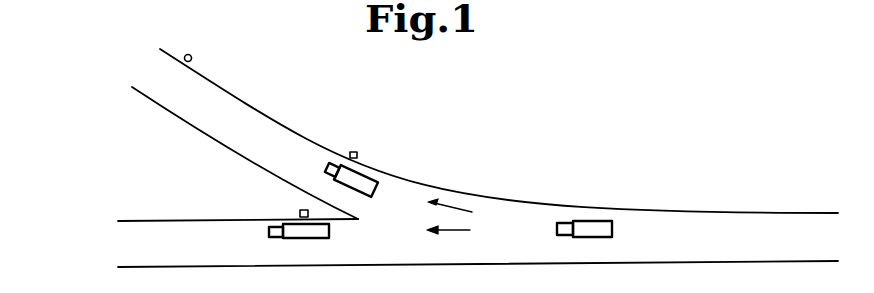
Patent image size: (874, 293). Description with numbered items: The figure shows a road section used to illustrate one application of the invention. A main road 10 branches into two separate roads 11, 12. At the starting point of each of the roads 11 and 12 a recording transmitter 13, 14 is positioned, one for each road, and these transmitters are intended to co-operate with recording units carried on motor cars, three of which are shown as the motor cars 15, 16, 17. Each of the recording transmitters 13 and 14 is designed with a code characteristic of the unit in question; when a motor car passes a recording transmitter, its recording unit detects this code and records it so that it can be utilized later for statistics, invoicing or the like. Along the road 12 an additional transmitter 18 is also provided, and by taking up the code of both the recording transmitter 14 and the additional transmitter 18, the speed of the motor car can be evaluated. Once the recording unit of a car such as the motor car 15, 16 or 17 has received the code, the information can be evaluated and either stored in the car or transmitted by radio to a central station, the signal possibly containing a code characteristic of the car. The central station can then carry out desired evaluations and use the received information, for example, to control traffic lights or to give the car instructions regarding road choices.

The main road 10 is at (737, 222).
The road 11 is at (182, 228).
The road 12 is at (253, 127).
The recording transmitter 13 is at (301, 210).
The recording transmitter 14 is at (352, 152).
The motor car 15 is at (318, 238).
The motor car 16 is at (592, 221).
The motor car 17 is at (363, 173).
The additional transmitter 18 is at (192, 59).